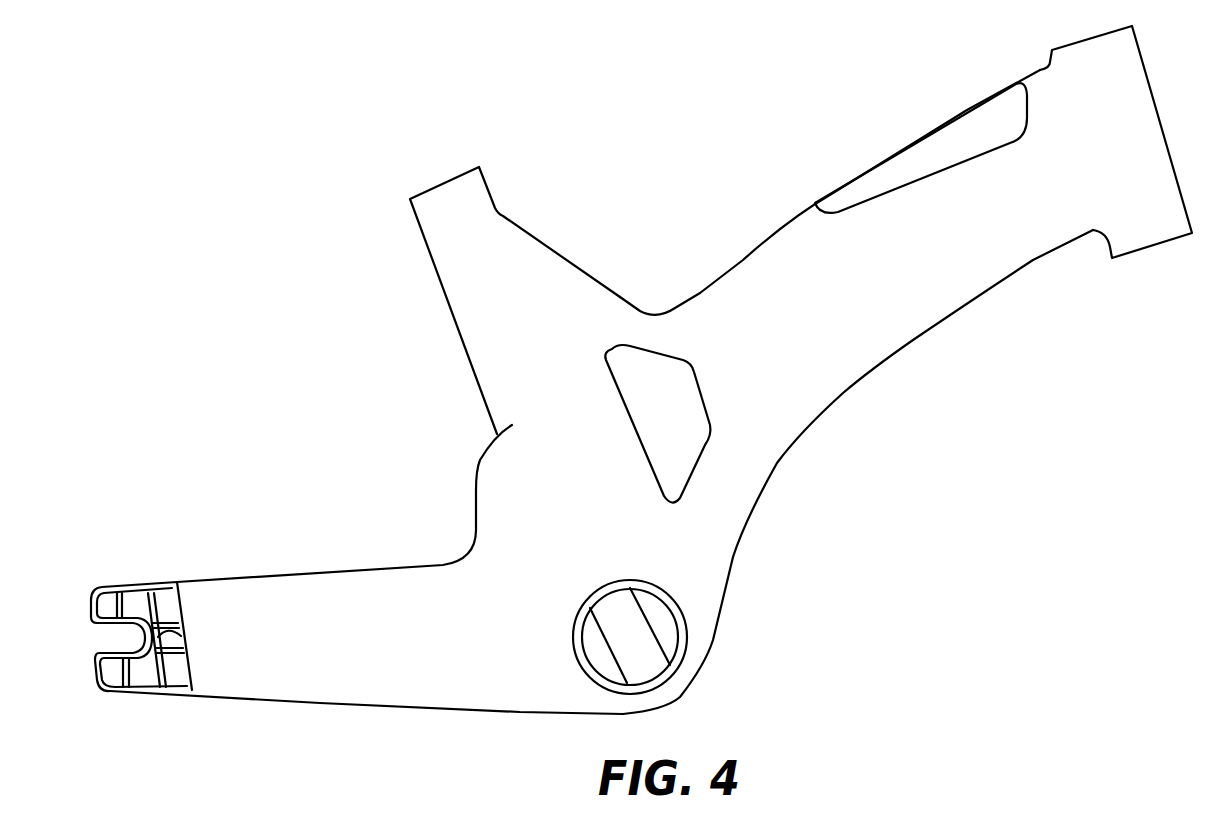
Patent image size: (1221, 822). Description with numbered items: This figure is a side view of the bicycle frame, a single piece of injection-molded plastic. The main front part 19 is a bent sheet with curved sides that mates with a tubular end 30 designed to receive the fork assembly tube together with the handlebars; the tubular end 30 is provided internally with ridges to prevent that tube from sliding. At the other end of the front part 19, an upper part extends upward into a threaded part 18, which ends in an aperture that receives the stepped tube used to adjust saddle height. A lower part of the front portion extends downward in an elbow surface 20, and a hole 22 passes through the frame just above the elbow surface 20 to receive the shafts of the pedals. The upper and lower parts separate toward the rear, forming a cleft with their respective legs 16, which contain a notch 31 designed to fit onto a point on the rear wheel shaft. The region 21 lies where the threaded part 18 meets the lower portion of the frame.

The legs 16 is at (103, 683).
The threaded part 18 is at (445, 296).
The main front part 19 is at (933, 328).
The elbow surface 20 is at (678, 698).
The seat stay junction 21 is at (476, 462).
The hole 22 is at (600, 632).
The tubular end 30 is at (1152, 246).
The notch 31 is at (183, 634).